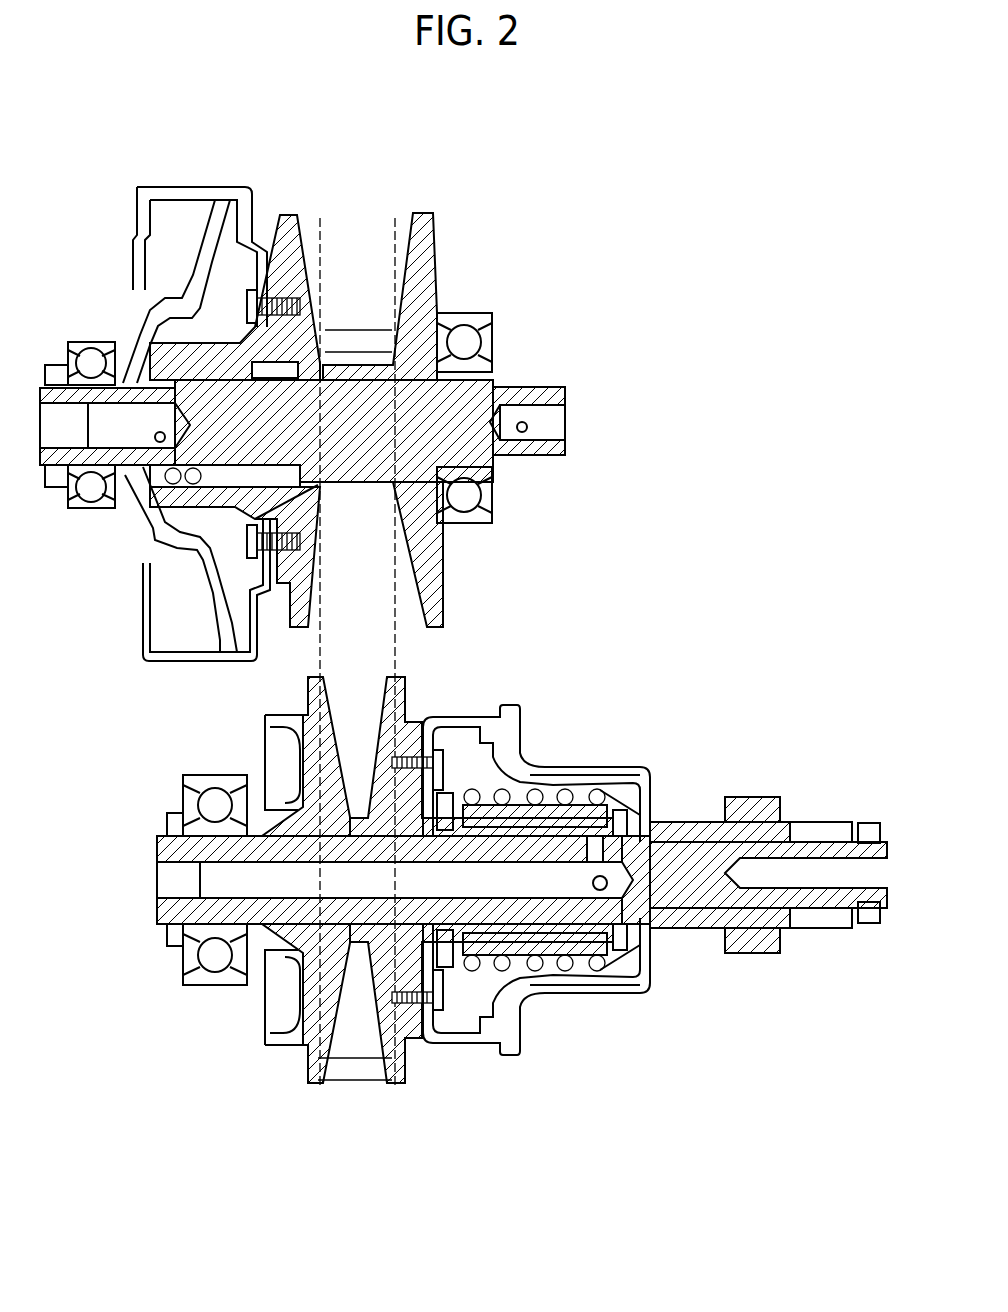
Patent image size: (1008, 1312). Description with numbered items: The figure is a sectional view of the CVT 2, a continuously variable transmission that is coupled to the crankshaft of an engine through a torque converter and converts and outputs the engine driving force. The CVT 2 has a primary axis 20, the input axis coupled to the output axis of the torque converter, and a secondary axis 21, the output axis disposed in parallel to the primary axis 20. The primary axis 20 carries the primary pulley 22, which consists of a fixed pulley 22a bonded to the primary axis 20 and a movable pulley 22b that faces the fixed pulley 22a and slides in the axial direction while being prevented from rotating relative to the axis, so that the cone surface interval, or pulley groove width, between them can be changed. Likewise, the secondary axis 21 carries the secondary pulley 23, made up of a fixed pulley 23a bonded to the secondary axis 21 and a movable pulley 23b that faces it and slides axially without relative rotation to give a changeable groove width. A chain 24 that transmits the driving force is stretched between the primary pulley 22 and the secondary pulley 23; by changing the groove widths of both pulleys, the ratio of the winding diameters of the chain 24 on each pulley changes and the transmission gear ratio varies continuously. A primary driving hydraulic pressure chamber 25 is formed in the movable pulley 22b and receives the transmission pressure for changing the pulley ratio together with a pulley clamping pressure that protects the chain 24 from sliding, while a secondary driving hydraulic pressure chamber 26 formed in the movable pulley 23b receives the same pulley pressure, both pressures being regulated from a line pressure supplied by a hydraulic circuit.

The CVT 2 is at (621, 152).
The primary axis 20 is at (562, 385).
The secondary axis 21 is at (825, 822).
The primary pulley 22 is at (412, 152).
The fixed pulley 22a is at (393, 222).
The movable pulley 22b is at (316, 222).
The secondary pulley 23 is at (413, 1170).
The fixed pulley 23a is at (313, 1085).
The movable pulley 23b is at (403, 1087).
The chain 24 is at (313, 657).
The primary driving hydraulic pressure chamber 25 is at (262, 240).
The secondary driving hydraulic pressure chamber 26 is at (457, 743).